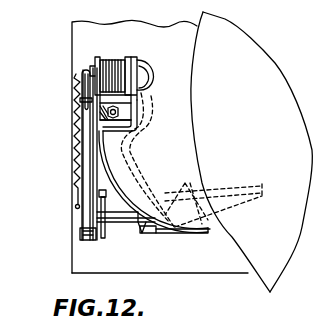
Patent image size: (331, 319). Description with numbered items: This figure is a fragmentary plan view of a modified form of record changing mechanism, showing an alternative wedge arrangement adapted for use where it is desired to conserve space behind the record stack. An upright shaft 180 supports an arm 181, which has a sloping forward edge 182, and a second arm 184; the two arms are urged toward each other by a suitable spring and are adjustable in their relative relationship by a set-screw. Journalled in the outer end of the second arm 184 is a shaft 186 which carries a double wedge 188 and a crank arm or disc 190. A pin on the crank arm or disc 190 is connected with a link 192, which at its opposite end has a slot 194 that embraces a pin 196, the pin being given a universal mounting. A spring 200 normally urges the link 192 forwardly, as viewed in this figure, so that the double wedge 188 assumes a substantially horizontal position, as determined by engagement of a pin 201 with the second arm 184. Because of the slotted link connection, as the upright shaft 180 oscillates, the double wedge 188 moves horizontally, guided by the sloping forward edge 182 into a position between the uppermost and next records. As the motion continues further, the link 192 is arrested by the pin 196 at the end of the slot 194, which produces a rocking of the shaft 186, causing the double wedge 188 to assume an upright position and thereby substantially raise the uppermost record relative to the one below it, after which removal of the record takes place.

The upright shaft 180 is at (157, 50).
The arm 181 is at (100, 184).
The sloping forward edge 182 is at (152, 234).
The second arm 184 is at (98, 188).
The shaft 186 is at (90, 218).
The double wedge 188 is at (142, 233).
The crank arm or disc 190 is at (86, 240).
The link 192 is at (88, 158).
The rod 194 is at (84, 70).
The pin 196 is at (82, 100).
The spring 200 is at (78, 147).
The pin 201 is at (106, 198).